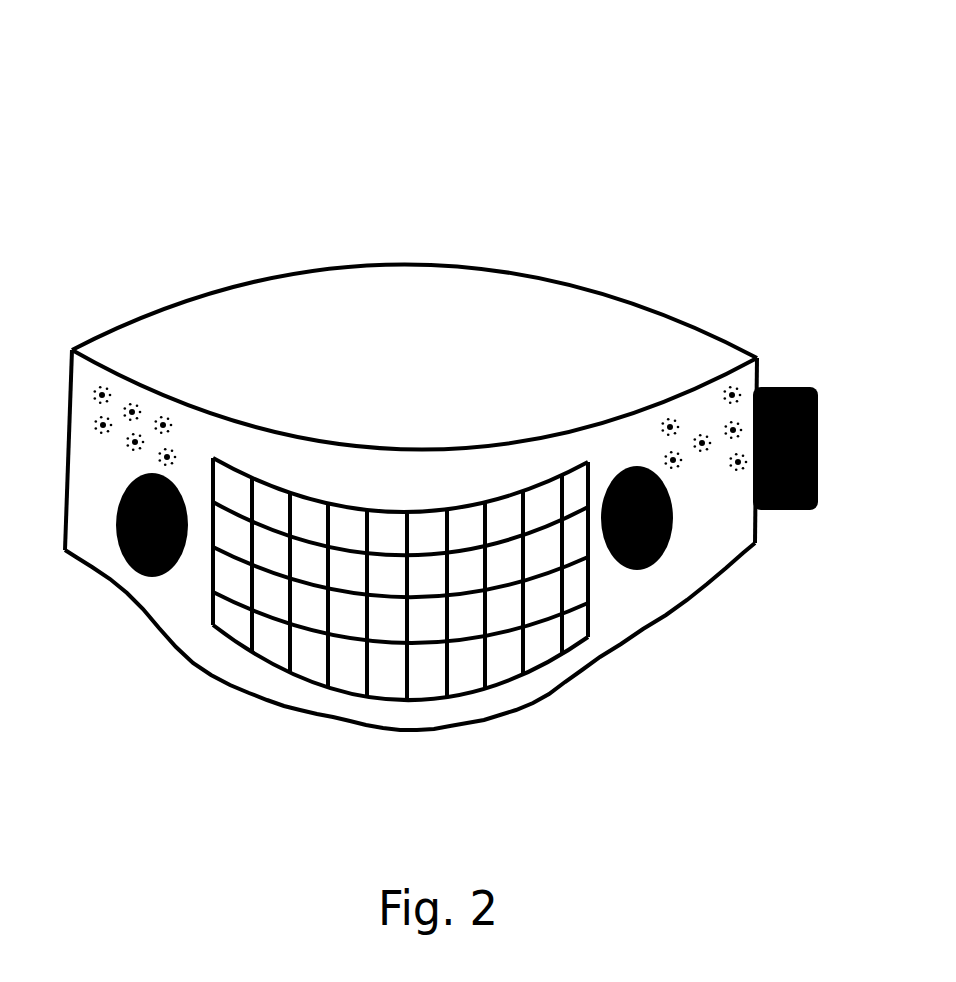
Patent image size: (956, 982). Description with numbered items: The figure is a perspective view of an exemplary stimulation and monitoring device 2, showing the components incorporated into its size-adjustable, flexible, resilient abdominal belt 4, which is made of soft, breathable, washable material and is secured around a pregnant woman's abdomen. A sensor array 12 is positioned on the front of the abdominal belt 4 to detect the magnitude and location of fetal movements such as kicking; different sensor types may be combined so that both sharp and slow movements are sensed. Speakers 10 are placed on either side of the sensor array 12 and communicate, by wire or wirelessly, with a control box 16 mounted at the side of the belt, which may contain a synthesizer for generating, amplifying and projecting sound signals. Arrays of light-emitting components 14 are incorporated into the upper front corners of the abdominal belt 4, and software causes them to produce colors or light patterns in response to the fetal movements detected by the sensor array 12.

The stimulation and monitoring device 2 is at (430, 433).
The abdominal belt 4 is at (190, 663).
The speakers 10 is at (115, 532).
The sensor array 12 is at (520, 672).
The array of light-emitting components 14 is at (115, 393).
The control box 16 is at (787, 510).